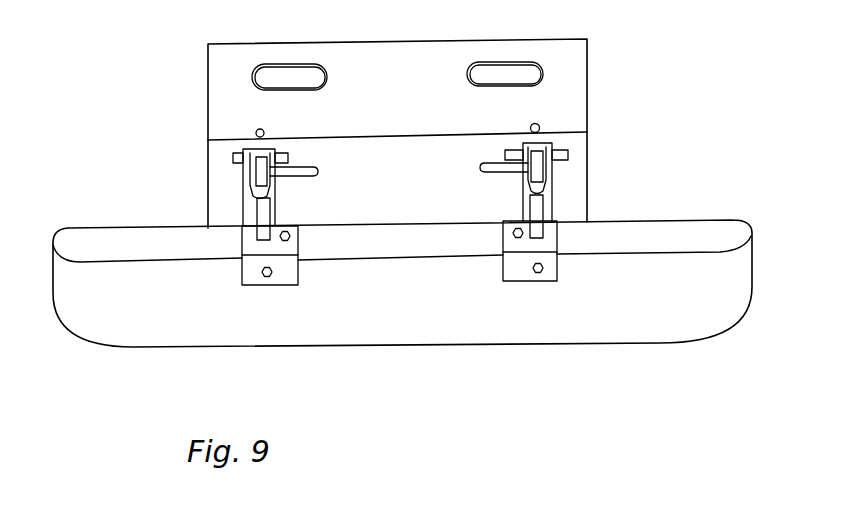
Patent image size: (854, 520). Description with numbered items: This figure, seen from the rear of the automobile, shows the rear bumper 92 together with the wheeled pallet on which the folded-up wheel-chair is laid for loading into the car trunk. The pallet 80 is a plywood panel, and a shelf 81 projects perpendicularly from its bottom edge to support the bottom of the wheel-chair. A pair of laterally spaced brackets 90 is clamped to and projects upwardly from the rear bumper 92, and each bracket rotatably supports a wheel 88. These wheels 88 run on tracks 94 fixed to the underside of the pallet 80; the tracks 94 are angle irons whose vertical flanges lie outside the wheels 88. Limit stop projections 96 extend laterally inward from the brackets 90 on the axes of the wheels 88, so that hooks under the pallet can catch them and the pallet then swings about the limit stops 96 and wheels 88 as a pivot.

The pallet 80 is at (393, 150).
The shelf 81 is at (220, 98).
The wheels 88 is at (262, 172).
The brackets 90 is at (263, 212).
The rear bumper 92 is at (400, 305).
The tracks 94 is at (266, 152).
The limit stop projections 96 is at (310, 168).